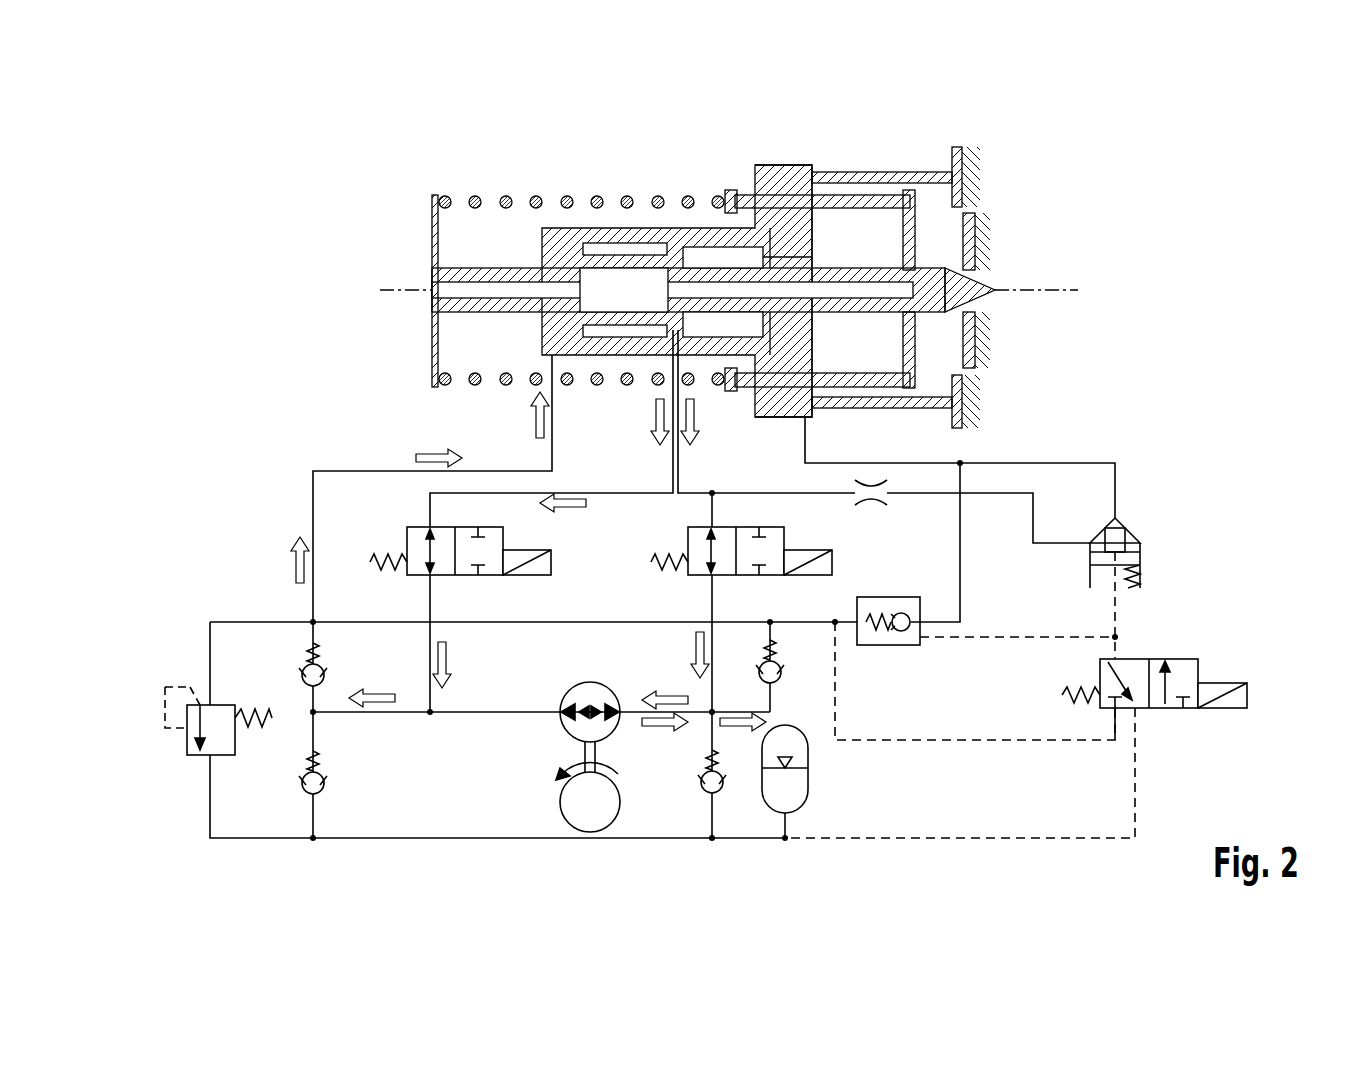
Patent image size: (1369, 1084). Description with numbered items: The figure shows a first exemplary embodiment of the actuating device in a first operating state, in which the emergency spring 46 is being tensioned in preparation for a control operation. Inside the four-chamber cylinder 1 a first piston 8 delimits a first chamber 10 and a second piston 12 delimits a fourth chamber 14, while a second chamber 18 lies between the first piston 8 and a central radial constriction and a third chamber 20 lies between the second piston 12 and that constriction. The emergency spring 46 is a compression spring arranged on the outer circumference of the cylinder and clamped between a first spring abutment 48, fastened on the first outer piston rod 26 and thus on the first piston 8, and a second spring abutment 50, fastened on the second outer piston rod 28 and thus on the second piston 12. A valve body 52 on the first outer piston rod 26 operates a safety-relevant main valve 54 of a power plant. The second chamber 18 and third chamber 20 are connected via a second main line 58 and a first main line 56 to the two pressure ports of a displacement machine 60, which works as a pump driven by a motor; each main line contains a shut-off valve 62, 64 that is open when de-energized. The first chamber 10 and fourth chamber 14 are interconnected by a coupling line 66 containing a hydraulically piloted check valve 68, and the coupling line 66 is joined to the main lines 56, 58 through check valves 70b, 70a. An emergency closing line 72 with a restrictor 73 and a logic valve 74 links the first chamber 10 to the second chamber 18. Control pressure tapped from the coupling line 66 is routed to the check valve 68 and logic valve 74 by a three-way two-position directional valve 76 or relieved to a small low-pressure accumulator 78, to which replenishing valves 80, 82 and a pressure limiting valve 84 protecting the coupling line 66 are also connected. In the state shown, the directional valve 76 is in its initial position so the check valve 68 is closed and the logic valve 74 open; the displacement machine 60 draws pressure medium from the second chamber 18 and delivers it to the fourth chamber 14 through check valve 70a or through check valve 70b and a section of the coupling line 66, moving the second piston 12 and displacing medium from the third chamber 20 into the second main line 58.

The four-chamber cylinder 1 is at (557, 160).
The first piston 8 is at (777, 180).
The first chamber 10 is at (787, 245).
The second piston 12 is at (575, 247).
The fourth chamber 14 is at (540, 262).
The second chamber 18 is at (703, 247).
The third chamber 20 is at (612, 243).
The first outer piston rod 26 is at (870, 268).
The second outer piston rod 28 is at (484, 268).
The emergency spring 46 is at (660, 196).
The first spring abutment 48 is at (737, 193).
The second spring abutment 50 is at (431, 258).
The valve body 52 is at (962, 268).
The main valve 54 is at (1008, 316).
The first main line 56 is at (680, 462).
The second main line 58 is at (672, 468).
The displacement machine 60 is at (572, 690).
The shut-off valve 62 is at (683, 588).
The shut-off valve 64 is at (413, 588).
The coupling line 66 is at (380, 470).
The hydraulically piloted check valve 68 is at (887, 647).
The check valve 70a is at (300, 665).
The check valve 70b is at (762, 668).
The emergency closing line 72 is at (830, 463).
The restrictor 73 is at (868, 506).
The logic valve 74 is at (1158, 542).
The 3/2 directional valve 76 is at (1226, 664).
The low-pressure accumulator 78 is at (810, 790).
The replenishing valve 80 is at (700, 785).
The replenishing valve 82 is at (322, 790).
The pressure limiting valve 84 is at (168, 752).